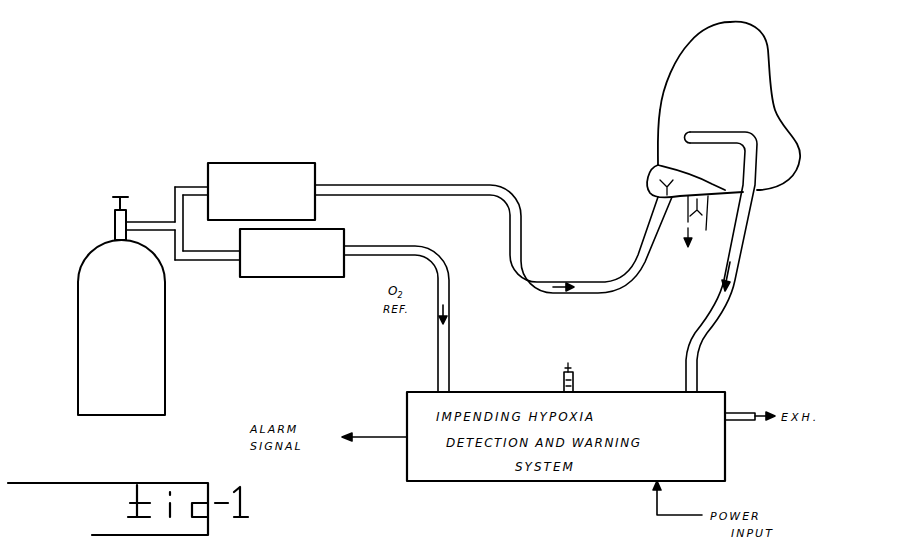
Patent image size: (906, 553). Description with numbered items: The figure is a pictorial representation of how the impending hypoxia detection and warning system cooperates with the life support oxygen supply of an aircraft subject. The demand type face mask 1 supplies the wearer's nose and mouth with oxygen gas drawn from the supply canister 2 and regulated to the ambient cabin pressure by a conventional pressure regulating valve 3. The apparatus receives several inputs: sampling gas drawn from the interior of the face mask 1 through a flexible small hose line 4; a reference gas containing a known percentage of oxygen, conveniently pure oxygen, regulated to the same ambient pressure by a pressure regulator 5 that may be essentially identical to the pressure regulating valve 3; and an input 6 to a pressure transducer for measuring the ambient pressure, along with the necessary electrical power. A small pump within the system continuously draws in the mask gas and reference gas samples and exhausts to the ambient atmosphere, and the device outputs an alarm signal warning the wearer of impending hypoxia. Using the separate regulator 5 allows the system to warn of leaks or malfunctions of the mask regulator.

The demand type face mask 1 is at (676, 82).
The supply canister 2 is at (78, 278).
The pressure regulating valve 3 is at (264, 163).
The flexible small hose line 4 is at (745, 240).
The pressure regulator 5 is at (270, 279).
The input to pressure transducer 6 is at (574, 385).